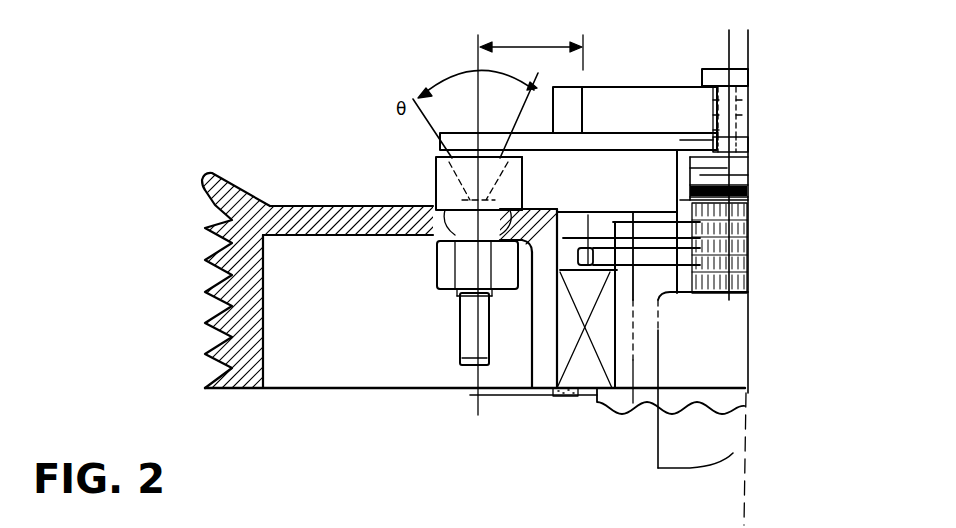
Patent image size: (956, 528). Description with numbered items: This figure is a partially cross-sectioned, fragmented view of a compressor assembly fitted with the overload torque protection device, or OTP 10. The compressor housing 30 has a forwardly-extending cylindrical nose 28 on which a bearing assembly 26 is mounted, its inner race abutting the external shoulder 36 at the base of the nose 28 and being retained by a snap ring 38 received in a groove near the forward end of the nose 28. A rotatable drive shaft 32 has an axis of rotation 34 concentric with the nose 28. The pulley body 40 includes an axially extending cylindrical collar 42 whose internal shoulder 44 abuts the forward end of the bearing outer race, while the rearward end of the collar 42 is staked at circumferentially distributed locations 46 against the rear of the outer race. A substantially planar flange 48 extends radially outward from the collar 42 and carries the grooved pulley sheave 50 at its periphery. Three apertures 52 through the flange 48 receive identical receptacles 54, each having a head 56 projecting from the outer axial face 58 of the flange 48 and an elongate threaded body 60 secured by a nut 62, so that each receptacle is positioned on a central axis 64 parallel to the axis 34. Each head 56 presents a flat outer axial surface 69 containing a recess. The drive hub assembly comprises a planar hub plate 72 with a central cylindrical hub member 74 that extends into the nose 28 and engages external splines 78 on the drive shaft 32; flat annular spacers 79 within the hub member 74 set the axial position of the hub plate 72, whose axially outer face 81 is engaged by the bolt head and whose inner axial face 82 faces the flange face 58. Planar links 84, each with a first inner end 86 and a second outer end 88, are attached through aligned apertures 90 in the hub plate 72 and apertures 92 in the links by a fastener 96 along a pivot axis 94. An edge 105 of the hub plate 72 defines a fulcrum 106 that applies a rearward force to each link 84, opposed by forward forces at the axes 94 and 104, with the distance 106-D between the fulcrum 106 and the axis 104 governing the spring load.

The OTP 10 is at (368, 92).
The bearing assembly 26 is at (578, 372).
The nose 28 is at (647, 373).
The compressor housing 30 is at (740, 388).
The drive shaft 32 is at (678, 457).
The axis of rotation 34 is at (752, 34).
The external shoulder 36 is at (600, 355).
The snap ring 38 is at (588, 214).
The pulley body 40 is at (208, 178).
The cylindrical collar 42 is at (531, 375).
The internal shoulder 44 is at (563, 274).
The staked locations 46 is at (558, 394).
The flange 48 is at (336, 237).
The pulley sheave 50 is at (231, 379).
The apertures 52 is at (525, 185).
The receptacles 54 is at (530, 167).
The head 56 is at (435, 185).
The outer axial face 58 is at (316, 200).
The threaded body 60 is at (459, 318).
The nut 62 is at (435, 268).
The central axes 64 is at (477, 404).
The outer axial surface 69 is at (436, 158).
The hub plate 72 is at (600, 86).
The hub member 74 is at (690, 208).
The external splines 78 is at (752, 212).
The annular spacers 79 is at (752, 187).
The axially outer face 81 is at (662, 82).
The inner axial face 82 is at (634, 142).
The links 84 is at (612, 145).
The first inner end 86 is at (678, 158).
The second outer end 88 is at (494, 120).
The apertures 90 is at (750, 147).
The aperture 92 is at (750, 115).
The pivot axes 94 is at (728, 48).
The fastener 96 is at (748, 78).
The axis 104 is at (478, 110).
The edge 105 is at (556, 116).
The fulcrum 106 is at (585, 134).